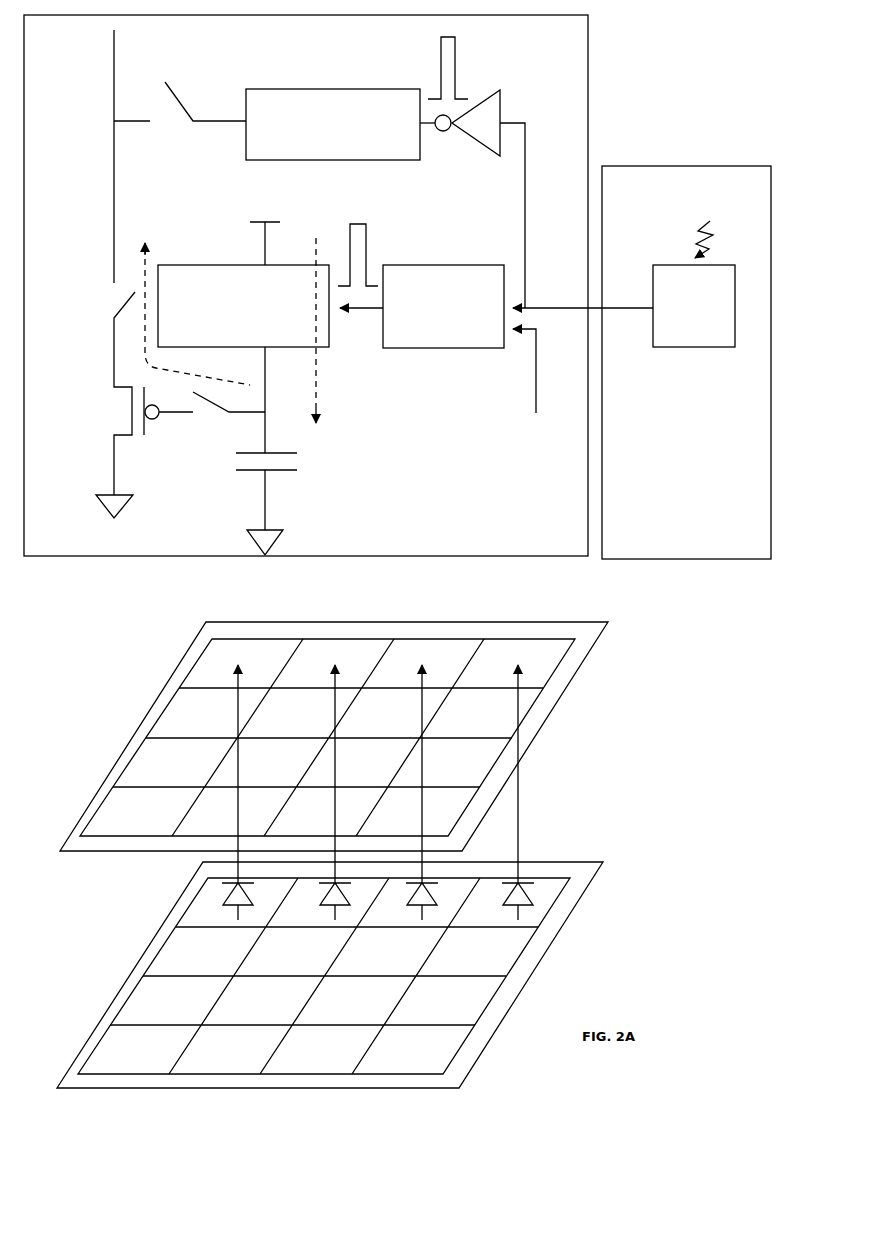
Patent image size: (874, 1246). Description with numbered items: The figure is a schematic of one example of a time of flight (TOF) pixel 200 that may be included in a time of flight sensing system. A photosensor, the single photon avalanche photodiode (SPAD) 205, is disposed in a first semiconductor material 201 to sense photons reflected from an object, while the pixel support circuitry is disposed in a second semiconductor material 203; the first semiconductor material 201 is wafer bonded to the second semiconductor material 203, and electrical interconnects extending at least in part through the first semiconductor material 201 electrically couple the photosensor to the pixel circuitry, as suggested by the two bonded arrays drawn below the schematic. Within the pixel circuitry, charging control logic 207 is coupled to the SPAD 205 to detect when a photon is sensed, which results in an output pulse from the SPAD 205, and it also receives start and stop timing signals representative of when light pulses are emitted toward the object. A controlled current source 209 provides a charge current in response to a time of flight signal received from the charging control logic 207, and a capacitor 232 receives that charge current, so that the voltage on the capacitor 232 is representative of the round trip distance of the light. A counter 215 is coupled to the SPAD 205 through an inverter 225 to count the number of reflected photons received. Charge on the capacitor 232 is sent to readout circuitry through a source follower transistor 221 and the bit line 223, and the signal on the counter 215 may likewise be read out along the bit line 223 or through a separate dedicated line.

The time of flight pixel 200 is at (397, 564).
The first semiconductor material 201 is at (543, 887).
The second semiconductor material 203 is at (270, 645).
The single photon avalanche photodiode 205 is at (694, 306).
The charging control logic 207 is at (443, 306).
The controlled current source 209 is at (243, 284).
The counter 215 is at (333, 124).
The source follower transistor 221 is at (152, 405).
The bit line 223 is at (145, 156).
The inverter 225 is at (492, 114).
The capacitor 232 is at (305, 451).